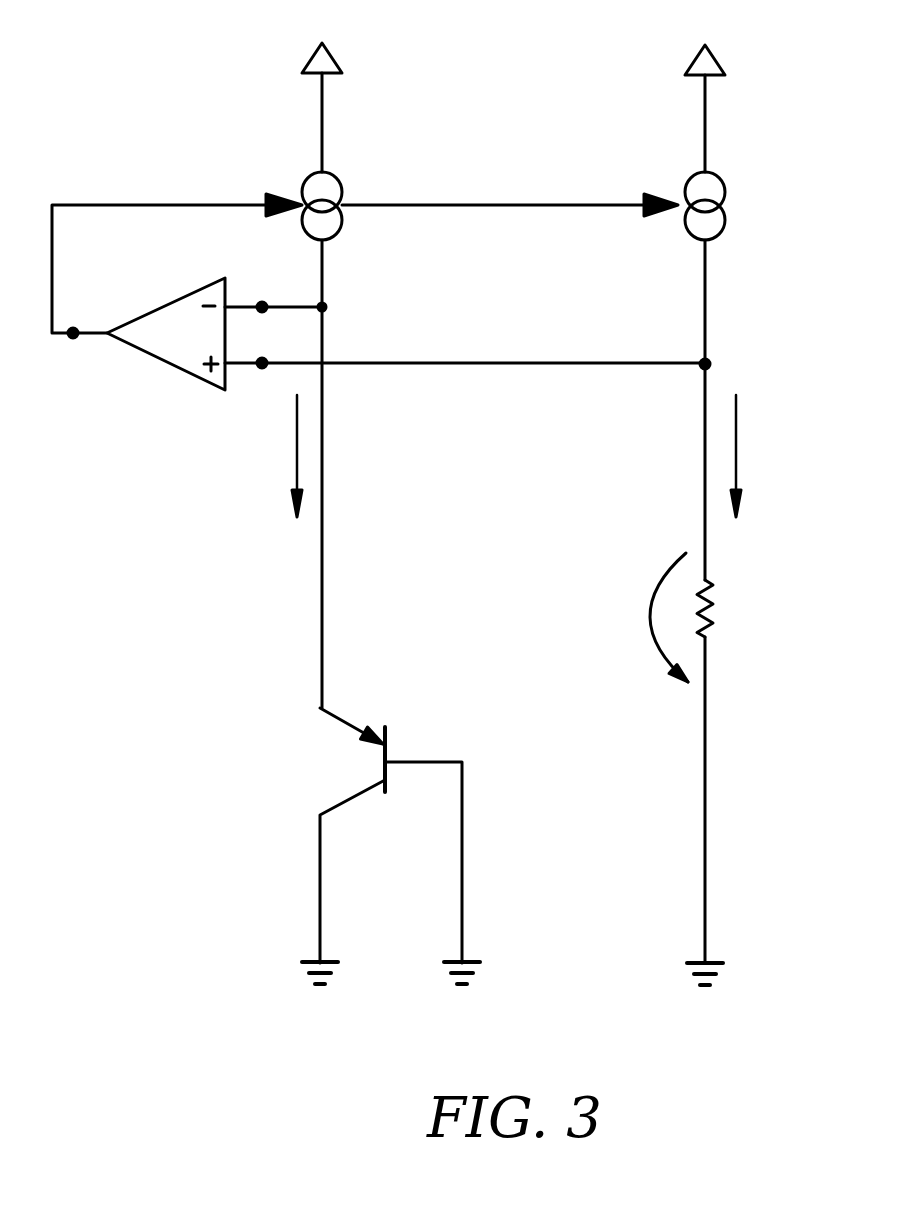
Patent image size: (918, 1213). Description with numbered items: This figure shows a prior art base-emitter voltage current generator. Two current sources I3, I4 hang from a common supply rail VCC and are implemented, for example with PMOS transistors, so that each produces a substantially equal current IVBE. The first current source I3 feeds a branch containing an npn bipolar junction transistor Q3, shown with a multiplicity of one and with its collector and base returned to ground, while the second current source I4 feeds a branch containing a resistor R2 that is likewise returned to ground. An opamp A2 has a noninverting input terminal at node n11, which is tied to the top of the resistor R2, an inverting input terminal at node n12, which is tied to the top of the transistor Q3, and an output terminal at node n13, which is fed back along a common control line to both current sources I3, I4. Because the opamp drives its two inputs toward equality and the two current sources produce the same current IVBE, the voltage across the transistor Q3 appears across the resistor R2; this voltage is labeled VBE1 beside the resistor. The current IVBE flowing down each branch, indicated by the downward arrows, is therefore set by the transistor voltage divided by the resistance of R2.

The supply voltage VCC is at (509, 86).
The current source I3 is at (335, 188).
The current source I4 is at (722, 190).
The opamp A2 is at (166, 330).
The noninverting input terminal node n11 is at (467, 346).
The inverting input terminal node n12 is at (275, 290).
The output terminal node n13 is at (365, 290).
The current IVBE is at (505, 456).
The npn bipolar junction transistor Q3 is at (358, 835).
The resistor R2 is at (730, 612).
The base-emitter voltage VBE1 is at (628, 617).